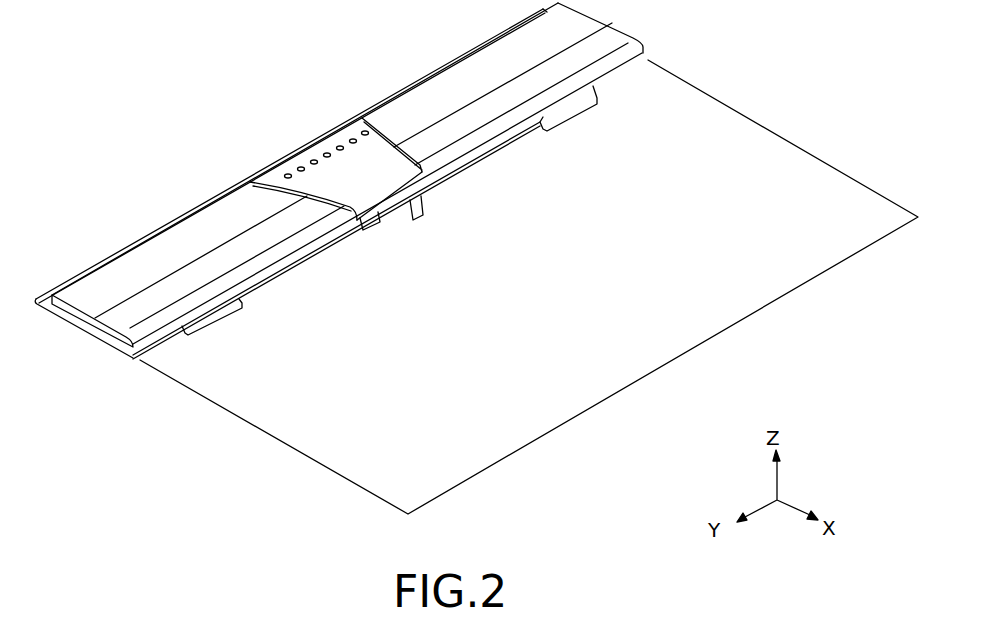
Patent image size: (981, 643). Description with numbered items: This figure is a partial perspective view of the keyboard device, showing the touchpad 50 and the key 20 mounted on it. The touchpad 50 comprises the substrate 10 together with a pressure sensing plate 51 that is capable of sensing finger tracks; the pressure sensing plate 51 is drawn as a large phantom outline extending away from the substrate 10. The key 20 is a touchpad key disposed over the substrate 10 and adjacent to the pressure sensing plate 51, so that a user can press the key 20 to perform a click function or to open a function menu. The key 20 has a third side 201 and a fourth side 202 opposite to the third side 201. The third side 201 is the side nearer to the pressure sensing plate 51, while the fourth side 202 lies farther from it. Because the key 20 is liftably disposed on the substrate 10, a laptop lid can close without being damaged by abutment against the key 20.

The substrate 10 is at (103, 258).
The key 20 is at (317, 135).
The third side 201 is at (390, 188).
The fourth side 202 is at (285, 158).
The touchpad 50 is at (150, 153).
The pressure sensing plate 51 is at (745, 112).